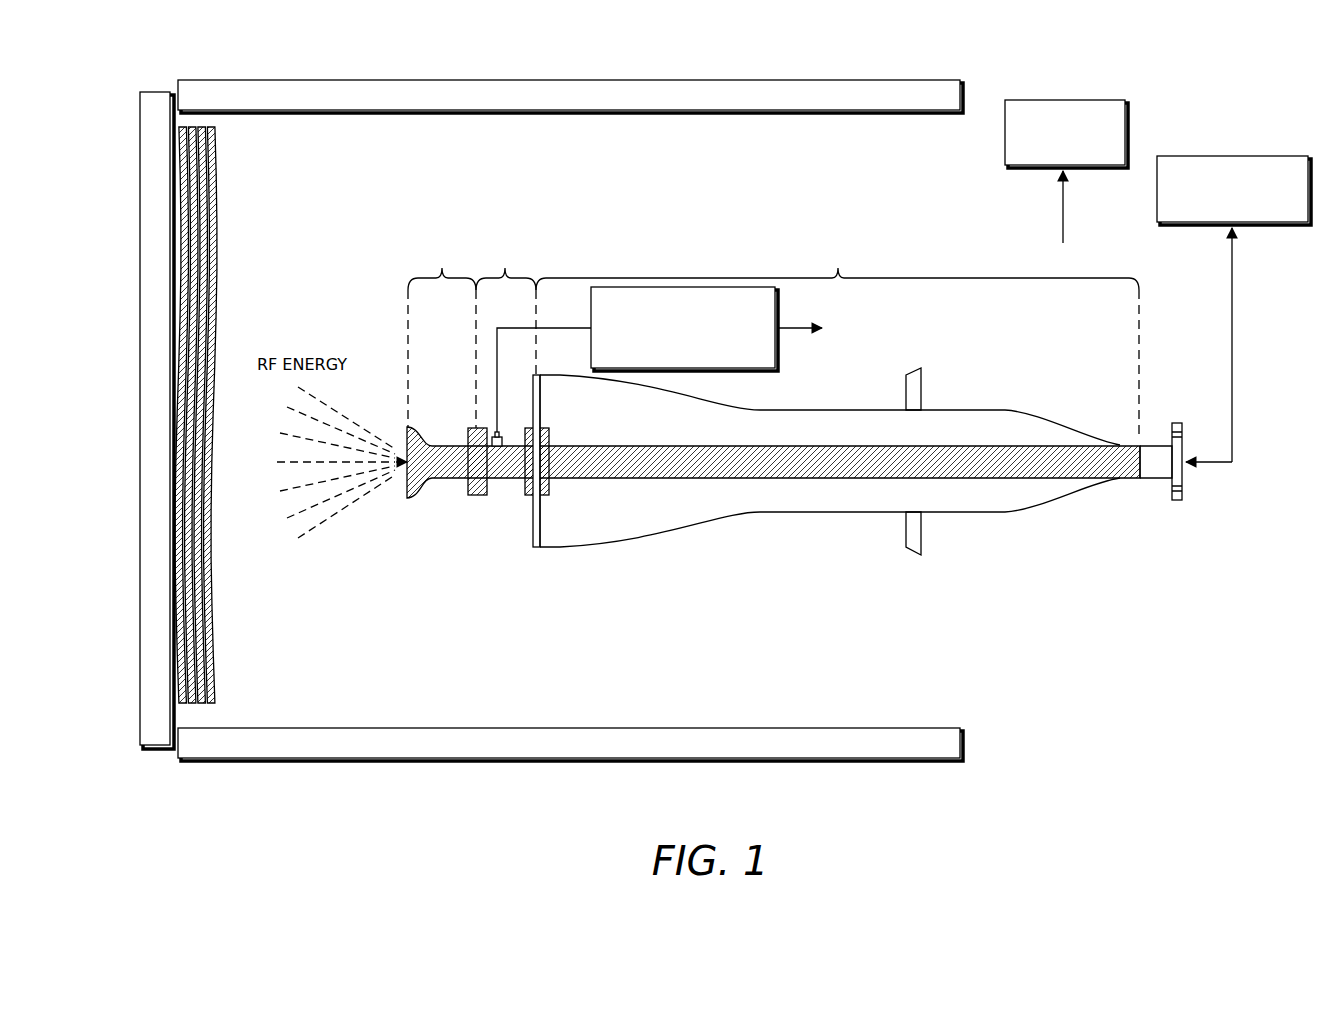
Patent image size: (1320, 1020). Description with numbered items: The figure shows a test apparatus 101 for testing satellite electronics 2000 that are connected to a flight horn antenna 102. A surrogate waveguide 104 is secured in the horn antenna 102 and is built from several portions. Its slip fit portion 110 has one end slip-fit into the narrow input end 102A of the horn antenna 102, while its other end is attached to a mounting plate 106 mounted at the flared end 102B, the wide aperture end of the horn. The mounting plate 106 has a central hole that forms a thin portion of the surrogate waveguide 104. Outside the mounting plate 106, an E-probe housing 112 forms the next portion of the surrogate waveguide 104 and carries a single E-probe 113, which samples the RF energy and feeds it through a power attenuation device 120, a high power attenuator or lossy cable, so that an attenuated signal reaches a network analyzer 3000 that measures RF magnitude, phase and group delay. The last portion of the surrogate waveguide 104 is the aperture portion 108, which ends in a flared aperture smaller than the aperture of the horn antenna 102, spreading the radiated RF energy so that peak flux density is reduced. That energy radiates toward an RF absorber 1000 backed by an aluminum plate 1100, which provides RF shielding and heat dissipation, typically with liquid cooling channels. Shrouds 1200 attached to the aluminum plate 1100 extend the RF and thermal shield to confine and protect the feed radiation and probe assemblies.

The test system 101 is at (781, 141).
The flight horn 102 is at (778, 517).
The input end 102A is at (1148, 483).
The flared end 102B is at (560, 553).
The surrogate waveguide 104 is at (1015, 453).
The mounting plate 106 is at (539, 552).
The aperture portion 108 is at (478, 208).
The slip-fit portion 110 is at (858, 195).
The E-probe housing 112 is at (588, 208).
The single E-probe 113 is at (493, 458).
The power attenuation device 120 is at (711, 287).
The RF absorber 1000 is at (232, 194).
The aluminum plate 1100 is at (152, 92).
The shroud 1200 is at (935, 80).
The electronics 2000 is at (1245, 156).
The network analyzer 3000 is at (1072, 100).